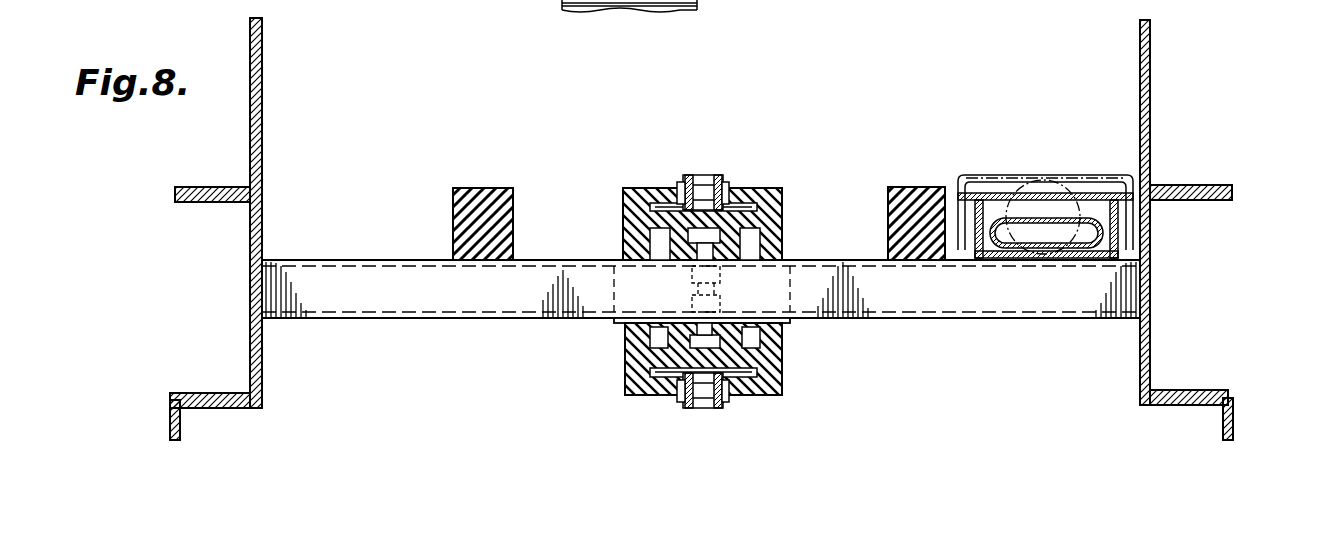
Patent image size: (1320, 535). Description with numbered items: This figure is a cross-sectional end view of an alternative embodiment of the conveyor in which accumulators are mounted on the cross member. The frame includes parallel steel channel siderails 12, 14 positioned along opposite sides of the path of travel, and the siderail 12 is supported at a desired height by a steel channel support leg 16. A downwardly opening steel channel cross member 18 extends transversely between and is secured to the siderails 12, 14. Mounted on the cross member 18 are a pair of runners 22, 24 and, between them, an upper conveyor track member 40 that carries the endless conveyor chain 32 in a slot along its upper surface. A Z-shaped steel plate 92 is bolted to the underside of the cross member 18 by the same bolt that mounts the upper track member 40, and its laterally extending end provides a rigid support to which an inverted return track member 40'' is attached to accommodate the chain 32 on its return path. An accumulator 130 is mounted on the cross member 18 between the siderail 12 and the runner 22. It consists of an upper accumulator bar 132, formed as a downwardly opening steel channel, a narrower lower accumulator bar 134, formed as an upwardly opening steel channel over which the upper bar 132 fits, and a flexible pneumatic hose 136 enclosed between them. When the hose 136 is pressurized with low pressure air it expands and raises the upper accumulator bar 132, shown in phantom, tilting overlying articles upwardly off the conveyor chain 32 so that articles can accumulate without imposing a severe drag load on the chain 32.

The siderail 12 is at (1152, 276).
The siderail 14 is at (250, 262).
The support leg 16 is at (1233, 418).
The cross member 18 is at (595, 323).
The runner 22 is at (920, 187).
The runner 24 is at (500, 188).
The conveyor chain 32 is at (710, 166).
The conveyor track member 40 is at (722, 216).
The return track member 40'' is at (741, 365).
The Z-shaped steel plate 92 is at (621, 326).
The accumulator 130 is at (1068, 165).
The upper accumulator bar 132 is at (1003, 218).
The lower accumulator bar 134 is at (1112, 195).
The flexible pneumatic hose 136 is at (1027, 222).